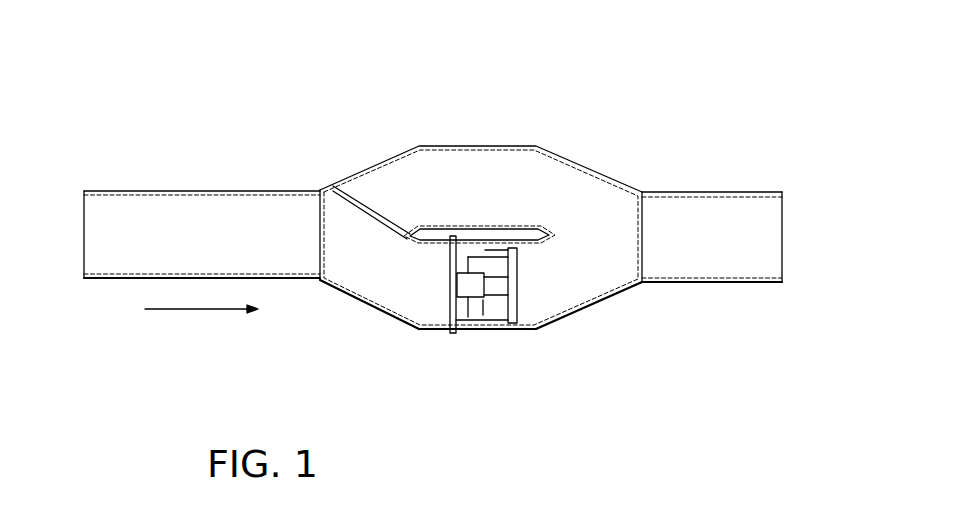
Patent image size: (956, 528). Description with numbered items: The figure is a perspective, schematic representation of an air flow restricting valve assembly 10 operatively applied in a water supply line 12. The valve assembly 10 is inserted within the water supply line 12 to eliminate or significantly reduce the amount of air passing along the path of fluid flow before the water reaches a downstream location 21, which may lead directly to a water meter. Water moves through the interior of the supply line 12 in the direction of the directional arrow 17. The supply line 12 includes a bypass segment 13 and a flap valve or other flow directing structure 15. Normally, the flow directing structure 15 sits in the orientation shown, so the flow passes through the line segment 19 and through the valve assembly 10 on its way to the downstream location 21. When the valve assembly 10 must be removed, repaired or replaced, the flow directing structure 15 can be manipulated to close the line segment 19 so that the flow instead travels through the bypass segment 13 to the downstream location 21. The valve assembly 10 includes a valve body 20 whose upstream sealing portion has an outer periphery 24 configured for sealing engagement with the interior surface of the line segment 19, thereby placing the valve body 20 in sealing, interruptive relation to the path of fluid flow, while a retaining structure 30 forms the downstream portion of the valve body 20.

The valve assembly 10 is at (500, 361).
The water supply line 12 is at (268, 160).
The bypass segment 13 is at (483, 145).
The flow directing structure 15 is at (358, 198).
The path of fluid flow 17 is at (173, 309).
The line segment 19 is at (366, 305).
The valve body 20 is at (480, 302).
The downstream location 21 is at (690, 181).
The outer periphery 24 is at (452, 334).
The retaining structure 30 is at (507, 313).